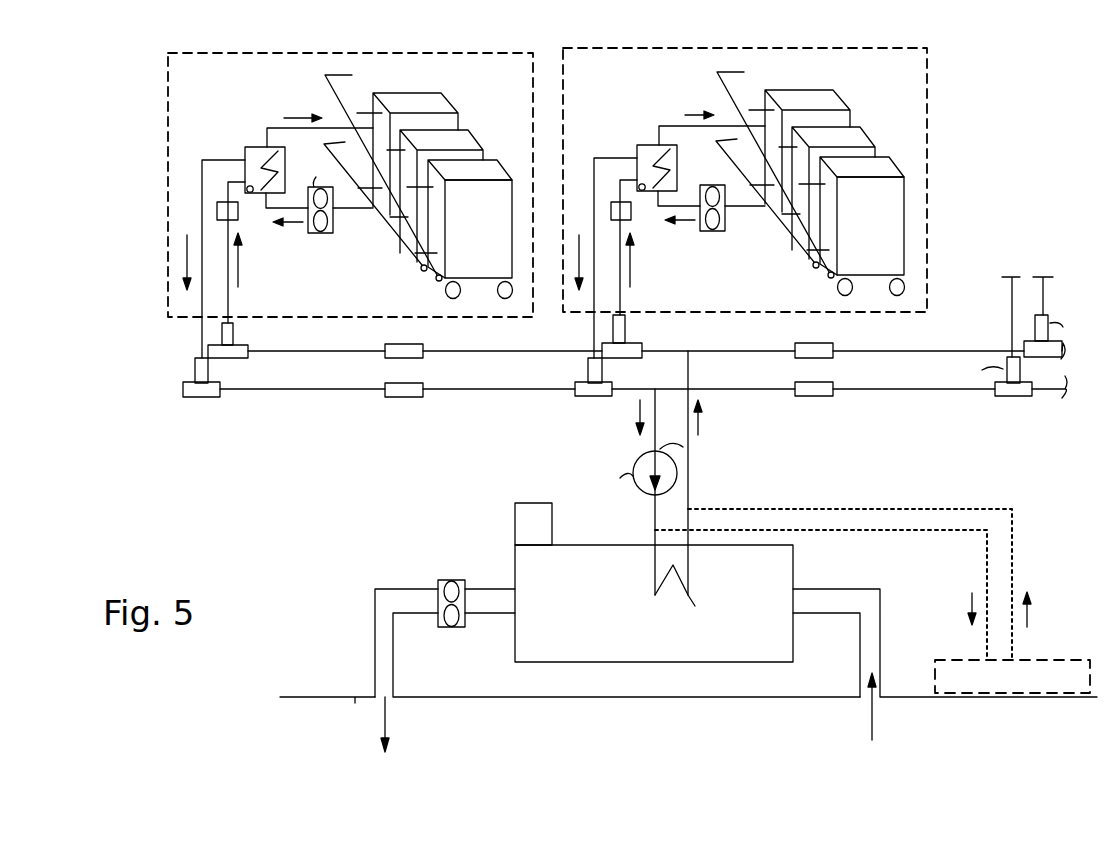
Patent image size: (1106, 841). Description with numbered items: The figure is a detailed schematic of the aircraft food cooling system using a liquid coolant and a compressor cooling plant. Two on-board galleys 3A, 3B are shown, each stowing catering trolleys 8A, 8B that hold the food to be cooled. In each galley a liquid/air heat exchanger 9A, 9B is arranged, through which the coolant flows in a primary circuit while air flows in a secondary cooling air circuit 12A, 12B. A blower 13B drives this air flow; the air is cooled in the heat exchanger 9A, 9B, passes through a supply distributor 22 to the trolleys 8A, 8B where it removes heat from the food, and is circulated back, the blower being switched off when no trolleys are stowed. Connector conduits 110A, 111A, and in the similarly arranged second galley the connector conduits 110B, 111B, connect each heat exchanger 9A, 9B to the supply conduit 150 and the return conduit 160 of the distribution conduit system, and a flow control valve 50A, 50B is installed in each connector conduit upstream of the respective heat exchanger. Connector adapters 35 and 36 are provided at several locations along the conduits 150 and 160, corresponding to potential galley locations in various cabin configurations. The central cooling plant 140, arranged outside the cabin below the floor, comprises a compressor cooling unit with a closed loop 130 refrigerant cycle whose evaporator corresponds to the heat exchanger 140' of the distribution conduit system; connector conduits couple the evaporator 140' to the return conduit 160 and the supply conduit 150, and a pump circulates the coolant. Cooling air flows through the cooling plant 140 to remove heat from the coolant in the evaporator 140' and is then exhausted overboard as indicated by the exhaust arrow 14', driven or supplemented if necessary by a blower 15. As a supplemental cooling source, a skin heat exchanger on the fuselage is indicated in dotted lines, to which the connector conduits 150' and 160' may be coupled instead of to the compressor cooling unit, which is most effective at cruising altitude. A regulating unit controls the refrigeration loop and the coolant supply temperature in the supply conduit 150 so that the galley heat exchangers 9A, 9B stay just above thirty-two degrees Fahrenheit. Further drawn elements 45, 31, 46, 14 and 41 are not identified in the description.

The on-board galley 3A is at (166, 73).
The on-board galley 3B is at (927, 137).
The trolley 8A is at (437, 93).
The trolley 8B is at (833, 97).
The heat exchanger 9A is at (247, 147).
The heat exchanger 9B is at (646, 145).
The secondary cooling air circuit 12A is at (290, 118).
The secondary cooling air circuit 12B is at (685, 115).
The blower 13B is at (713, 185).
The supply distributor 22 is at (347, 100).
The valve 45 is at (253, 197).
The flow control valve 50A is at (217, 213).
The flow control valve 50B is at (613, 203).
The connector conduit 110A is at (200, 200).
The second supply line 110B is at (592, 327).
The connector conduit 111A is at (226, 296).
The second return line 111B is at (621, 291).
The connection piece 31 is at (236, 323).
The connector adapter 35 is at (248, 345).
The connector adapter 36 is at (183, 392).
The closed loop refrigerant cycle 130 is at (195, 370).
The supply conduit 150 is at (656, 362).
The return conduit 160 is at (643, 556).
The connector conduit 150' is at (724, 473).
The connector conduit 160' is at (685, 492).
The expansion vessel 46 is at (512, 503).
The central cooling plant 140 is at (626, 601).
The evaporator 140' is at (697, 598).
The blower 15 is at (438, 580).
The inlet line 14 is at (945, 667).
The exhaust arrow 14' is at (617, 670).
The external heat source 41 is at (1008, 685).